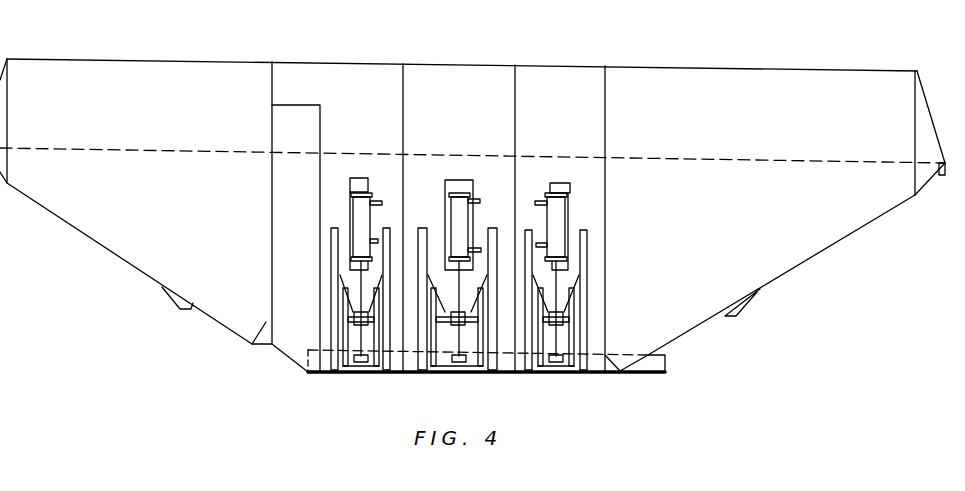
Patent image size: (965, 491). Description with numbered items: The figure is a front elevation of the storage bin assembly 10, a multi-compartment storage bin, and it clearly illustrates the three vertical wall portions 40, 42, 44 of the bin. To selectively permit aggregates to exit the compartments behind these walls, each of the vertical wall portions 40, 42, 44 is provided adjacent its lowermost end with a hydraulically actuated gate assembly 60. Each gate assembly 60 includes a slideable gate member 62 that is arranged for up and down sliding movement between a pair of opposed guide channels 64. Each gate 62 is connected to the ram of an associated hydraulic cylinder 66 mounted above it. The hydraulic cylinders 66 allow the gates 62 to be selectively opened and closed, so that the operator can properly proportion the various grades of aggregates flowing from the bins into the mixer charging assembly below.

The storage bin assembly 10 is at (680, 62).
The vertical wall portion 40 is at (360, 116).
The vertical wall portion 42 is at (466, 116).
The vertical wall portion 44 is at (572, 116).
The hydraulically actuated gate assembly 60 is at (402, 379).
The slideable gate member 62 is at (354, 352).
The guide channels 64 is at (385, 250).
The hydraulic cylinder 66 is at (362, 211).